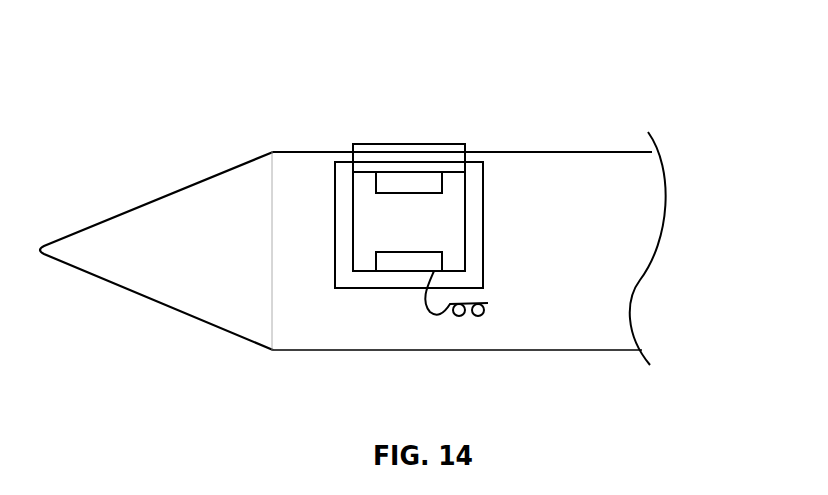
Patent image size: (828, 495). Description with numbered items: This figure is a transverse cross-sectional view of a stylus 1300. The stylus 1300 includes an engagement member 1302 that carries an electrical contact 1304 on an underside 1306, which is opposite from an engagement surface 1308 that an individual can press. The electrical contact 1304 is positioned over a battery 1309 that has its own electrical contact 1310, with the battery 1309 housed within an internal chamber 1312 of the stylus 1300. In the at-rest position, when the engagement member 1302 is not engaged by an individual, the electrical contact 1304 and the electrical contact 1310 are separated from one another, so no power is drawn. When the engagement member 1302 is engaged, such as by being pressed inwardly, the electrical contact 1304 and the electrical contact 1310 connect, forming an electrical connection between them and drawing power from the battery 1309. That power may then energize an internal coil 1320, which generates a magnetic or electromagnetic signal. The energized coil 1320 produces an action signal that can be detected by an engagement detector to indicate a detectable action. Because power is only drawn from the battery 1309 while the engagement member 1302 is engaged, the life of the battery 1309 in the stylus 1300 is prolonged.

The stylus 1300 is at (182, 129).
The engagement member 1302 is at (442, 153).
The electrical contact 1304 is at (407, 186).
The underside 1306 is at (367, 168).
The engagement surface 1308 is at (397, 143).
The battery 1309 is at (418, 262).
The electrical contact 1310 is at (430, 252).
The internal chamber 1312 is at (367, 233).
The internal coil 1320 is at (478, 316).